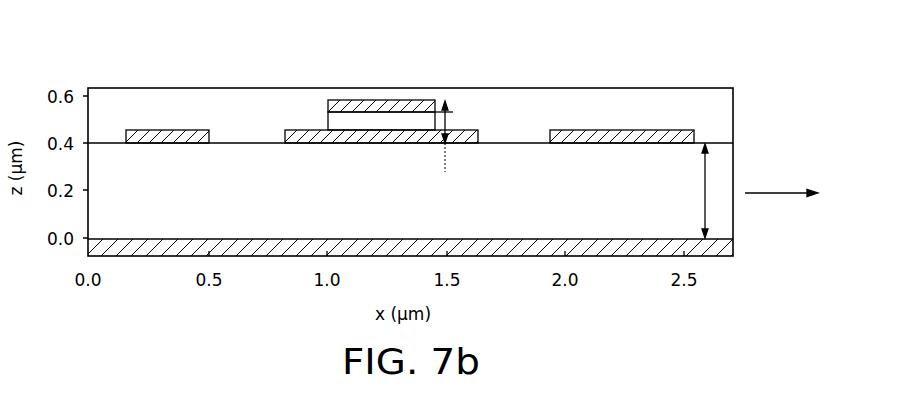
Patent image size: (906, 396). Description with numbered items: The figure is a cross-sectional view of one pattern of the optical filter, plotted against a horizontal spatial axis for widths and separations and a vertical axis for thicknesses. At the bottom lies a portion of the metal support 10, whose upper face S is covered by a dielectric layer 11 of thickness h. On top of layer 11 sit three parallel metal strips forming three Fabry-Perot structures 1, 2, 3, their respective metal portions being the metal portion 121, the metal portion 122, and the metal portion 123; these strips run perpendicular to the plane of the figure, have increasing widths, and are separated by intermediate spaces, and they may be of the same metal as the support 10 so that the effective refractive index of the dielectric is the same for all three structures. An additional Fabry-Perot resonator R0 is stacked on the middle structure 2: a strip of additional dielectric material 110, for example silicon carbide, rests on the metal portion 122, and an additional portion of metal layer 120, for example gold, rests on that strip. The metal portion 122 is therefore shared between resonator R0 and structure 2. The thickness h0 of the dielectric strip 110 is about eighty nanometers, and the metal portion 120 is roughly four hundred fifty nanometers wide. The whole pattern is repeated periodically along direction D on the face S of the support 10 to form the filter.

The Fabry-Perot structure 1 is at (171, 112).
The Fabry-Perot structure 2 is at (469, 109).
The Fabry-Perot structure 3 is at (666, 109).
The support 10 is at (176, 247).
The layer 11 is at (677, 203).
The strip of additional dielectric material 110 is at (328, 122).
The additional portion of metal layer 120 is at (343, 106).
The metal portion 121 is at (187, 137).
The metal portion 122 is at (468, 137).
The metal portion 123 is at (676, 137).
The additional Fabry-Perot resonator R0 is at (394, 87).
The face of the support S is at (520, 228).
The thickness of layer h is at (710, 191).
The thickness of the strip of additional dielectric material h0 is at (453, 140).
The direction D is at (781, 180).